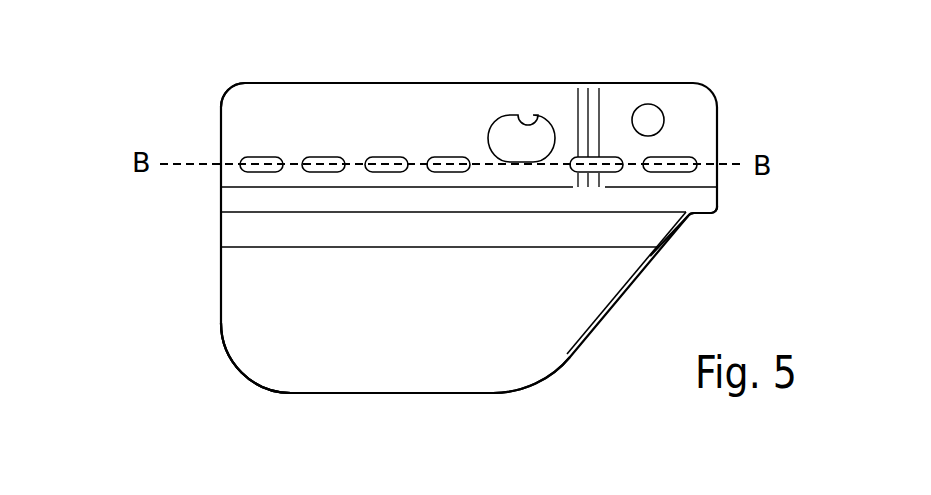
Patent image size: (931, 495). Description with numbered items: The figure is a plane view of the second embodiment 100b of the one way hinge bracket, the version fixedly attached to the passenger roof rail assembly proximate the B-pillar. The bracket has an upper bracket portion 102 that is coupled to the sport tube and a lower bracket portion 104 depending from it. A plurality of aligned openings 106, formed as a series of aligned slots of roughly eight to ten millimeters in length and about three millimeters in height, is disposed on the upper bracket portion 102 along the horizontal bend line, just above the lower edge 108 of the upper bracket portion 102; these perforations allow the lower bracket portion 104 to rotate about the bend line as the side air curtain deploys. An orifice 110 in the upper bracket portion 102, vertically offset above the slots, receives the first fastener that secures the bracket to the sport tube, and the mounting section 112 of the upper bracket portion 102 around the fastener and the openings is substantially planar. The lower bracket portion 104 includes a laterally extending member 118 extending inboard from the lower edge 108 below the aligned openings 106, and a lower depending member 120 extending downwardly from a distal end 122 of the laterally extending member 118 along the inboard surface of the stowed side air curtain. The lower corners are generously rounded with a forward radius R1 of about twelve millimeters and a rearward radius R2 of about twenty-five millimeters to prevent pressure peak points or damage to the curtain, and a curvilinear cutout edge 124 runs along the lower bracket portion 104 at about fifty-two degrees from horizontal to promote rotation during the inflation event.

The second embodiment of the one way hinge bracket 100b is at (135, 345).
The upper bracket portion 102 is at (400, 105).
The lower bracket portion 104 is at (460, 377).
The plurality of aligned openings 106 is at (673, 160).
The lower edge 108 is at (703, 215).
The orifice 110 is at (530, 120).
The mounting section 112 is at (222, 102).
The laterally extending member 118 is at (235, 228).
The lower depending member 120 is at (312, 375).
The distal end 122 is at (677, 222).
The curvilinear cutout edge 124 is at (605, 323).
The radius R1 is at (241, 364).
The radius R2 is at (532, 374).